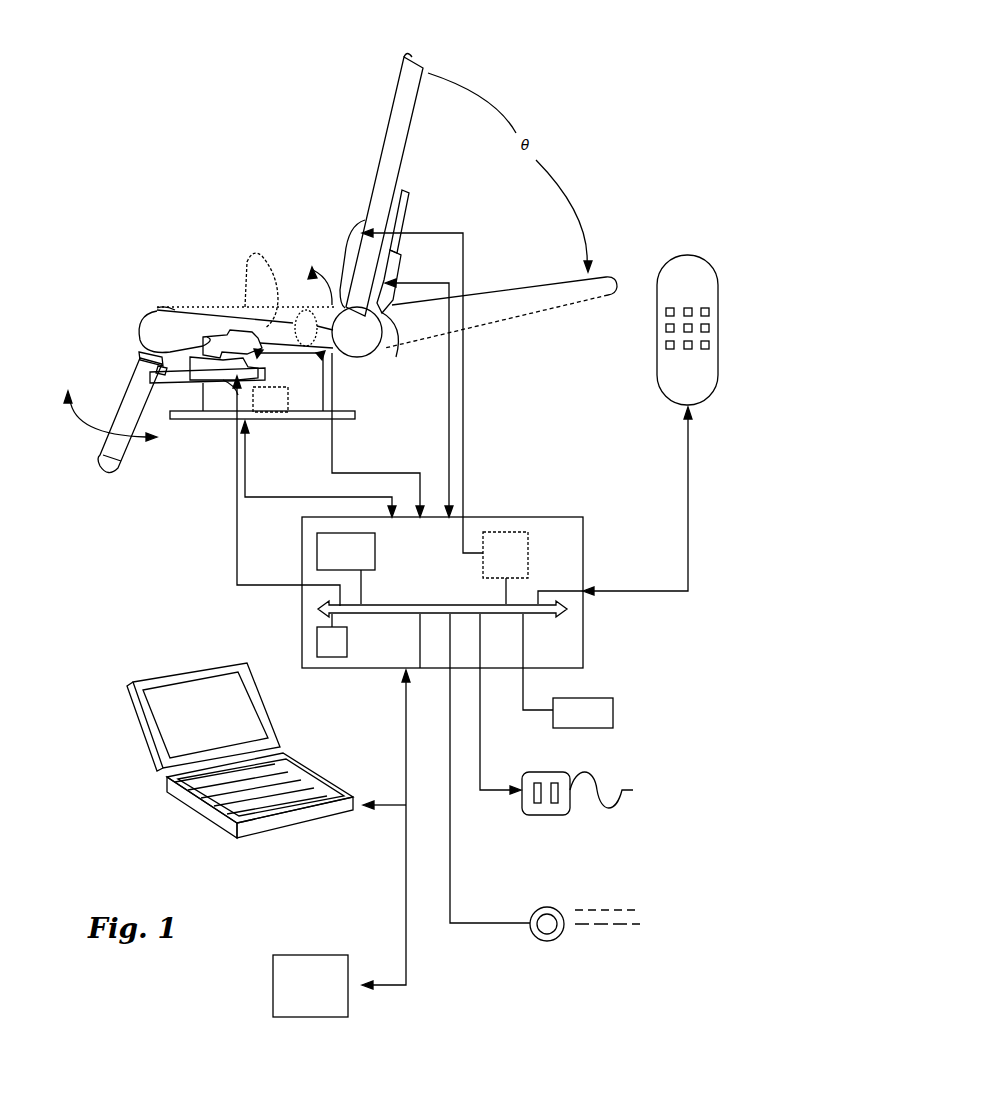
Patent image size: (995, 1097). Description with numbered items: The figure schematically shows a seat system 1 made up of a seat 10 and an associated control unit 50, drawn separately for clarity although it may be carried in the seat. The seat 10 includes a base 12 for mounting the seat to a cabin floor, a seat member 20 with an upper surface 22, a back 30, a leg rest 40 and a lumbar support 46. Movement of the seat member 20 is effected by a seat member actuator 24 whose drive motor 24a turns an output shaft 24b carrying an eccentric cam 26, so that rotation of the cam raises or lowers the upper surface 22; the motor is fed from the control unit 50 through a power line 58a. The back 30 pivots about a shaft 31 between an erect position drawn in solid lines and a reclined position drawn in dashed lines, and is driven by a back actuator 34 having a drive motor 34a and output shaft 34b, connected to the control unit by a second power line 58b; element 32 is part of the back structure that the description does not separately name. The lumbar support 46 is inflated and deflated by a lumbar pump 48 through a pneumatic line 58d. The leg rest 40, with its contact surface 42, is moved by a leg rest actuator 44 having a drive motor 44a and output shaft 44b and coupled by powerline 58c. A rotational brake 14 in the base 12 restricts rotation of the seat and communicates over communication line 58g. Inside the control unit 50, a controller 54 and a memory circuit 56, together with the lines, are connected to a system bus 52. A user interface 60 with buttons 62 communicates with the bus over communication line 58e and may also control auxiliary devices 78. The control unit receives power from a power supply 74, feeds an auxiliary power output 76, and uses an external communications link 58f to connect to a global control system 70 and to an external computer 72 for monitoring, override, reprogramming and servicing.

The seat system 1 is at (648, 68).
The seat 10 is at (101, 246).
The base 12 is at (294, 386).
The rotational brake 14 is at (275, 402).
The seat member 20 is at (150, 330).
The upper surface 22 is at (261, 285).
The seat member actuator 24 is at (227, 333).
The drive motor 24a is at (158, 308).
The output shaft 24b is at (293, 340).
The eccentric cam 26 is at (327, 348).
The back 30 is at (419, 66).
The shaft 31 is at (348, 341).
The backrest frame 32 is at (393, 112).
The back actuator 34 is at (393, 253).
The drive motor 34a is at (397, 345).
The output shaft 34b is at (403, 194).
The leg rest 40 is at (112, 467).
The contact surface 42 is at (97, 442).
The leg rest actuator 44 is at (190, 383).
The drive motor 44a is at (223, 395).
The output shaft 44b is at (157, 363).
The lumbar support 46 is at (356, 226).
The lumbar pump 48 is at (522, 552).
The control unit 50 is at (580, 650).
The system bus 52 is at (563, 600).
The controller 54 is at (337, 560).
The memory circuit 56 is at (332, 653).
The power line 58a is at (345, 473).
The second power line 58b is at (450, 427).
The powerline 58c is at (237, 548).
The pneumatic line 58d is at (463, 373).
The communication line 58e is at (690, 496).
The external communications link 58f is at (406, 876).
The communication line 58g is at (280, 503).
The user interface 60 is at (707, 282).
The buttons 62 is at (709, 328).
The global control system 70 is at (273, 985).
The external computer 72 is at (182, 800).
The power supply 74 is at (537, 938).
The auxiliary power output 76 is at (543, 814).
The auxiliary devices 78 is at (615, 700).